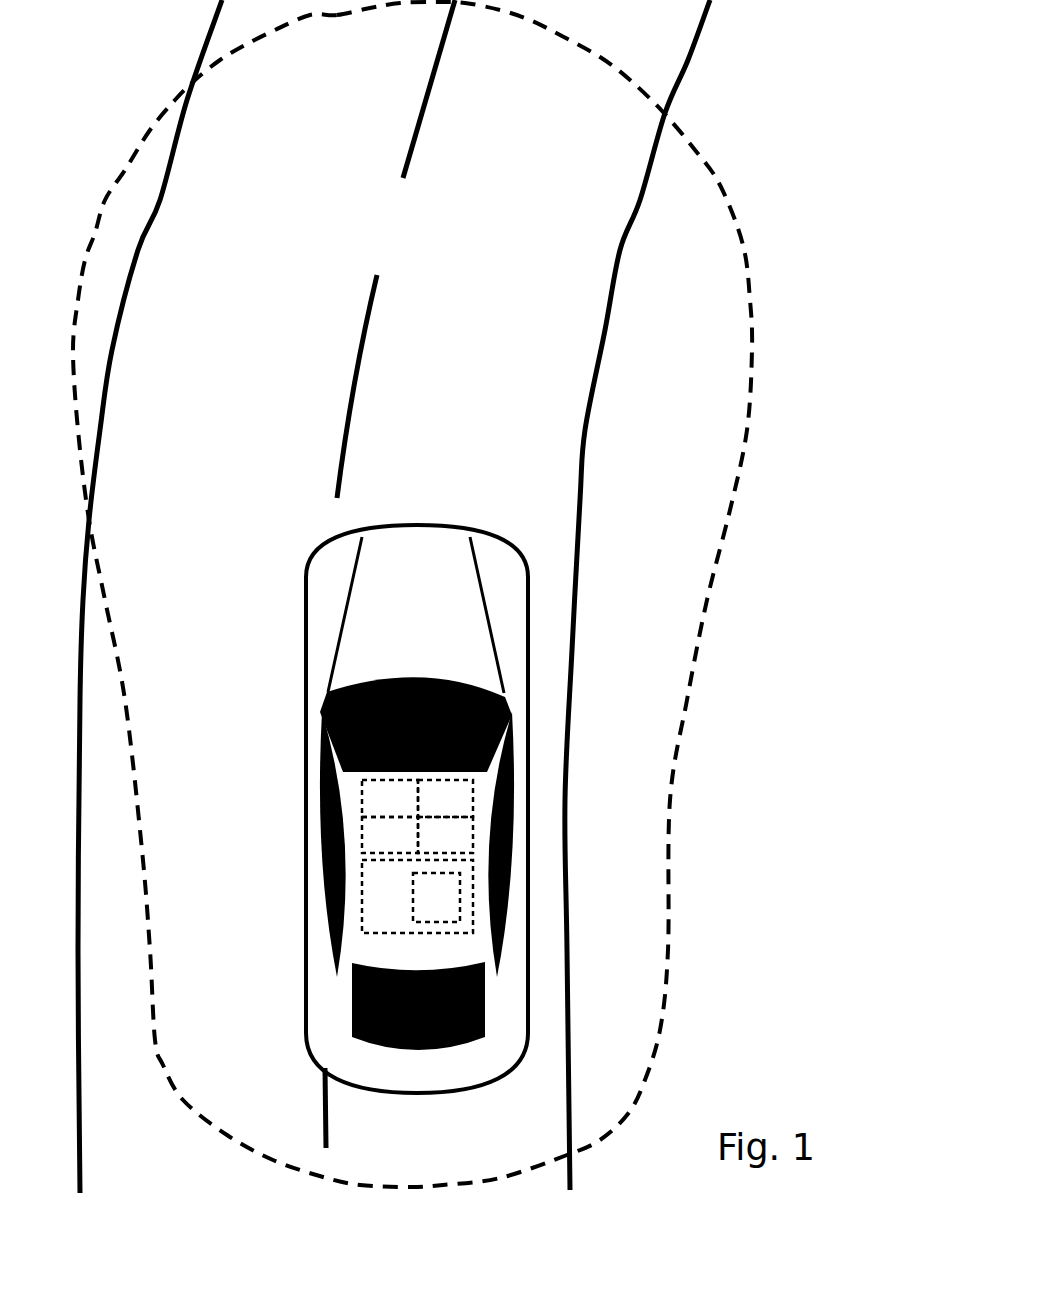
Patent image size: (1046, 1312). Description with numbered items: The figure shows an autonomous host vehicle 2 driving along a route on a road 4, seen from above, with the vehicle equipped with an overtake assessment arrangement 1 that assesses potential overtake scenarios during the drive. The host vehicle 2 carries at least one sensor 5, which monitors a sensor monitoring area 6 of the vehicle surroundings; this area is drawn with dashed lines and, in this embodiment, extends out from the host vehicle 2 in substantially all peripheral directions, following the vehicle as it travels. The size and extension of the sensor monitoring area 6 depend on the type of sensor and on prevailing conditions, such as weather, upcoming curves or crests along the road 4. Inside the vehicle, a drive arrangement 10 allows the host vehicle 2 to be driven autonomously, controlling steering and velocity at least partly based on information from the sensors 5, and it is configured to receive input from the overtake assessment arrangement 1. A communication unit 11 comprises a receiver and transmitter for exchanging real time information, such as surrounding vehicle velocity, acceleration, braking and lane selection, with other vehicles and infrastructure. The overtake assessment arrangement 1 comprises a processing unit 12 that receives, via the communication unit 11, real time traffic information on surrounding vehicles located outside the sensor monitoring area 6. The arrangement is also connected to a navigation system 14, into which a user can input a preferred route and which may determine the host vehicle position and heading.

The overtake assessment arrangement 1 is at (381, 911).
The autonomous vehicle 2 is at (552, 632).
The road 4 is at (688, 60).
The sensor 5 is at (438, 810).
The sensor monitoring area 6 is at (733, 213).
The drive arrangement 10 is at (377, 810).
The communication unit 11 is at (432, 845).
The processing unit 12 is at (422, 911).
The navigation system 14 is at (377, 845).